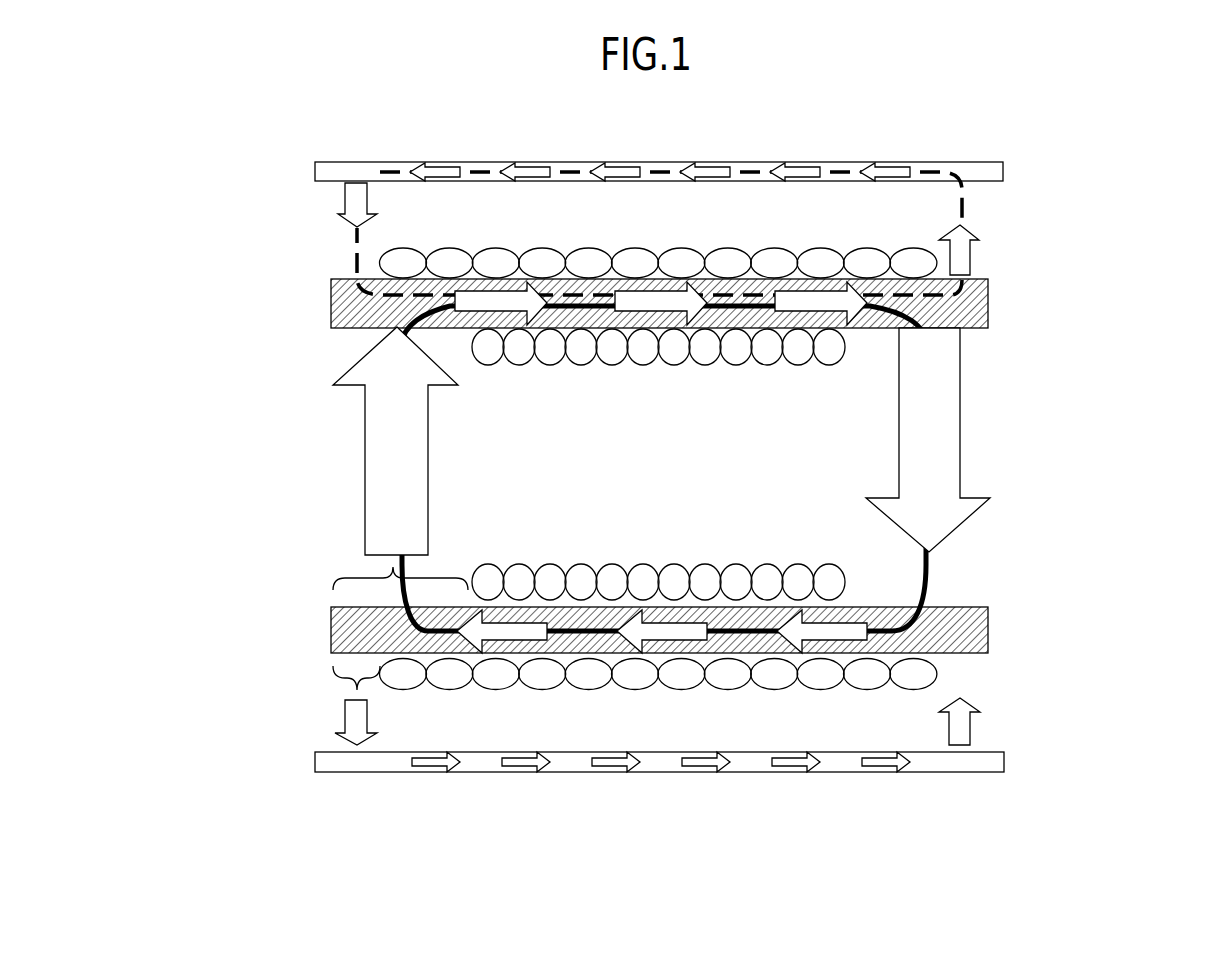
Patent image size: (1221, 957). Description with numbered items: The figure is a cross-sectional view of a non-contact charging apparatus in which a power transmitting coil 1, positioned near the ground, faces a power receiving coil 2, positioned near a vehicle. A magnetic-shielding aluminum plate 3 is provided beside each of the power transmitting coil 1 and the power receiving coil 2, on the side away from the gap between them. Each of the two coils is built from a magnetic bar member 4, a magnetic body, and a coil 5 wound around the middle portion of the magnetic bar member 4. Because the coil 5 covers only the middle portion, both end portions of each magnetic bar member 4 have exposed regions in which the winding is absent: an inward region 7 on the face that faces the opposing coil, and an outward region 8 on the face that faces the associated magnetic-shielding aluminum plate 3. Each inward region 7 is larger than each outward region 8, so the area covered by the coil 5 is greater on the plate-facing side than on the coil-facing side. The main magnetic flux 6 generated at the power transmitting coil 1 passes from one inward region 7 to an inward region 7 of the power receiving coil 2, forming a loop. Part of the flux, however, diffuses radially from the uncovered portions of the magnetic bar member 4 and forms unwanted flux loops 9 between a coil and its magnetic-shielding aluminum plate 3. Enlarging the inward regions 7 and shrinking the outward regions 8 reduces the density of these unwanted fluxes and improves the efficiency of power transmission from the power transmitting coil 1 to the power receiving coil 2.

The power transmitting coil 1 is at (292, 633).
The power receiving coil 2 is at (292, 307).
The magnetic-shielding aluminum plate 3 is at (985, 171).
The magnetic bar member 4 is at (977, 293).
The coil 5 is at (582, 350).
The main magnetic flux 6 is at (928, 452).
The exposed region (inward region) 7 is at (363, 573).
The exposed region (outward region) 8 is at (335, 685).
The unwanted flux loop 9 is at (962, 260).